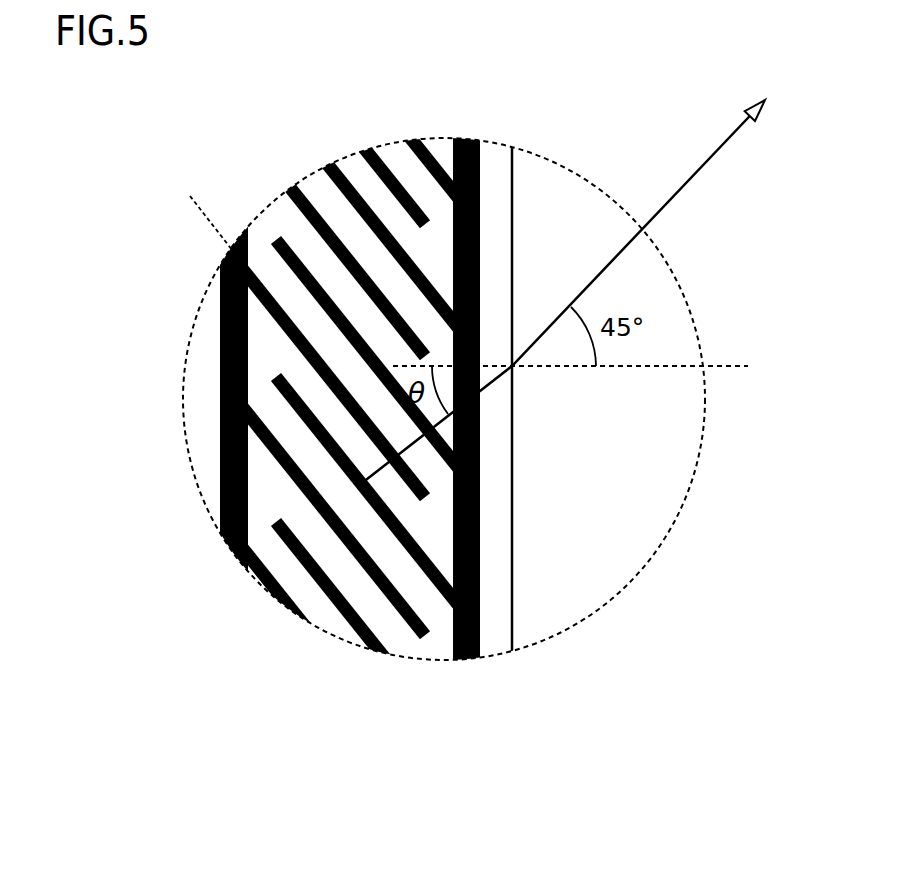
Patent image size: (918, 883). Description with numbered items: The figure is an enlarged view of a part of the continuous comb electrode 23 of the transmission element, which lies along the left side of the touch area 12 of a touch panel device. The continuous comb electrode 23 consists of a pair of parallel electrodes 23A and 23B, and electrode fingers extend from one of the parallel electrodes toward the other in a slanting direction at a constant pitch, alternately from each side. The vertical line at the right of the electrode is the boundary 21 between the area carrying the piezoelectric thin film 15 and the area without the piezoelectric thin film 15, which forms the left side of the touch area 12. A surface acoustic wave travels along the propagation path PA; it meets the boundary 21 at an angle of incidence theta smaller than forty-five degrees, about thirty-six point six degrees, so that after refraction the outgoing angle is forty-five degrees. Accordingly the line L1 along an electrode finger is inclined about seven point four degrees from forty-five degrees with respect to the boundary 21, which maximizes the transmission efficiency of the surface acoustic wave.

The touch area 12 is at (562, 207).
The piezoelectric thin film 15 is at (483, 158).
The boundary 21 is at (513, 583).
The continuous comb electrode 23 is at (357, 443).
The parallel electrode 23A is at (233, 547).
The parallel electrode 23B is at (479, 660).
The propagation path PA is at (700, 162).
The line along the electrode finger L1 is at (205, 212).